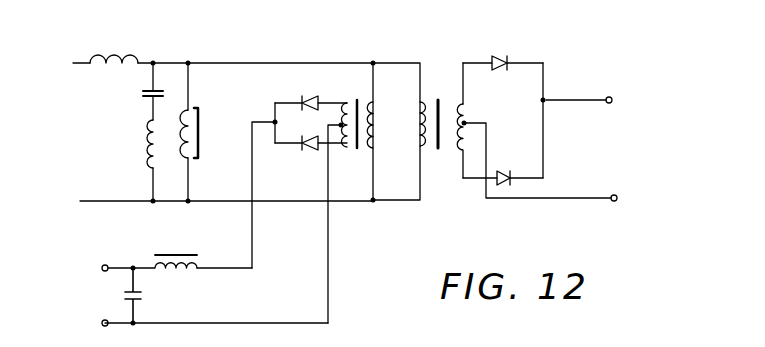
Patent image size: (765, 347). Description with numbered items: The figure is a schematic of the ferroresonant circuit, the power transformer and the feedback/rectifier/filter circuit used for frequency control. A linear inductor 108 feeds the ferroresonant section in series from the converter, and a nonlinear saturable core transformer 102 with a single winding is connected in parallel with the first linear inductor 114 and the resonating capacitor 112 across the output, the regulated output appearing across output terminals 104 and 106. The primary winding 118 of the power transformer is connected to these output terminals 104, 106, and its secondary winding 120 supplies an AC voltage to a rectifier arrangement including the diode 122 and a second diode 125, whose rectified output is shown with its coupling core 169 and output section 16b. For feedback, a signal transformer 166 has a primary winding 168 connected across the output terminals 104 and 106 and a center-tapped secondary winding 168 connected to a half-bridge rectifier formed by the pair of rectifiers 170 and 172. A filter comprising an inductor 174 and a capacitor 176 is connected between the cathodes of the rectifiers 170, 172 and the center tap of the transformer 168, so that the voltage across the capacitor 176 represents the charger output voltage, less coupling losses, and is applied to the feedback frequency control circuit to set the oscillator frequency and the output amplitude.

The linear inductor 108 is at (110, 59).
The first linear inductor 114 is at (150, 99).
The resonating capacitor 112 is at (146, 157).
The nonlinear saturable core transformer 102 is at (205, 128).
The rectifier 170 is at (322, 79).
The rectifier 172 is at (318, 152).
The signal transformer 166 is at (358, 86).
The primary winding 168 is at (347, 149).
The output terminal 104 is at (374, 62).
The primary winding 118 is at (418, 144).
The output terminal 106 is at (373, 203).
The transformer core 169 is at (437, 89).
The rectifier circuit 16b is at (461, 60).
The diode 122 is at (508, 62).
The secondary winding 120 is at (458, 117).
The diode 125 is at (505, 171).
The inductor 174 is at (178, 253).
The capacitor 176 is at (142, 294).